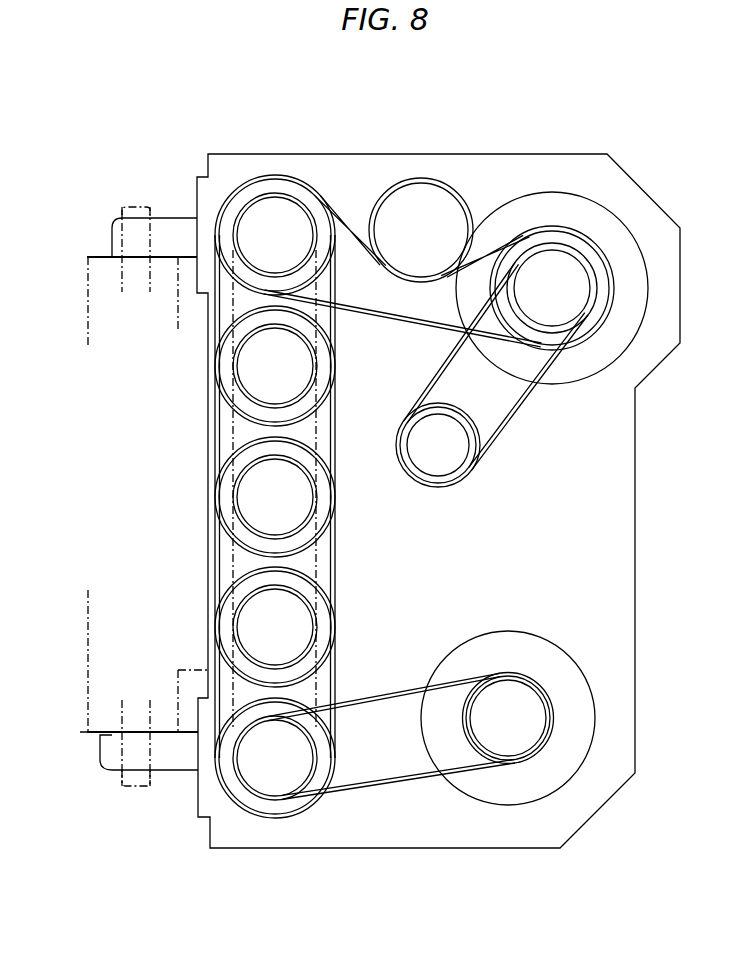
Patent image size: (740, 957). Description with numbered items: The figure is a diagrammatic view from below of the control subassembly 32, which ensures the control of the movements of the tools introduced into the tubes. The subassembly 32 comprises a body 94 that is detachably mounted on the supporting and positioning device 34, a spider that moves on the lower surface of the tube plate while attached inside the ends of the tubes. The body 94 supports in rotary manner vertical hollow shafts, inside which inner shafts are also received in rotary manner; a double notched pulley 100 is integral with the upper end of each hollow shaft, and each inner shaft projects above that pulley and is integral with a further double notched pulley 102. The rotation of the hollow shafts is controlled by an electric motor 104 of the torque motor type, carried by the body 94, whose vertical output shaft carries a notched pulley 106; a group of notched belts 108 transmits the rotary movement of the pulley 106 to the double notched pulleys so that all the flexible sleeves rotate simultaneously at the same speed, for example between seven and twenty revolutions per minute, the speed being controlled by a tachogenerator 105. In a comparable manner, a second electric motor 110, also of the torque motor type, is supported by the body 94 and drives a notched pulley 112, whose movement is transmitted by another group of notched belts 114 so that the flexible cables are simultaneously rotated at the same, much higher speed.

The control subassembly 32 is at (494, 136).
The supporting and positioning device 34 is at (101, 257).
The body 94 is at (538, 157).
The double notched pulley 100 is at (262, 184).
The double notched pulley 102 is at (300, 212).
The electric motor 104 is at (600, 210).
The tachogenerator 105 is at (462, 440).
The notched pulley 106 is at (595, 320).
The notched belts 108 is at (493, 247).
The electric motor 110 is at (515, 642).
The notched pulley 112 is at (523, 692).
The notched belts 114 is at (237, 550).